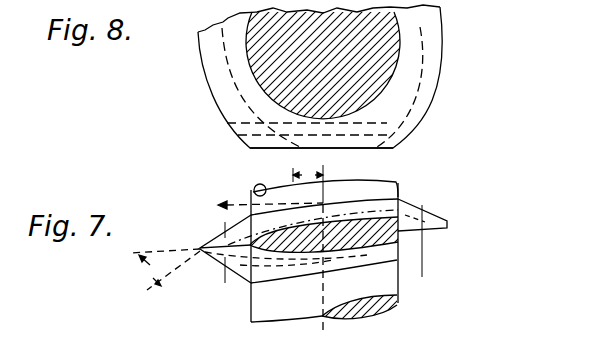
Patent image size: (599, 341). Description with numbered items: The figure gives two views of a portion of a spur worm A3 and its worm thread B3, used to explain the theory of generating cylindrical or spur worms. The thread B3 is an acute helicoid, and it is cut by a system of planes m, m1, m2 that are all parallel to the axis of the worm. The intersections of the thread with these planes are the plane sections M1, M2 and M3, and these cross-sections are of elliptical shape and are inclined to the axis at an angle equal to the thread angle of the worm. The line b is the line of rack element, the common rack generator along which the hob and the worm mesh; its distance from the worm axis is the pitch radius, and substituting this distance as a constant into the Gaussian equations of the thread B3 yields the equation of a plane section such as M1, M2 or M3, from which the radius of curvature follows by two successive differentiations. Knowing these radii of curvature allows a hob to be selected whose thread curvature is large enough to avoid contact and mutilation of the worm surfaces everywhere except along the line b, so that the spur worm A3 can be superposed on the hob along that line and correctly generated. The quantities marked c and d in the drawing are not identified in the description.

In FIG. 8, the spur worm A3 is at (446, 53).
In FIG. 7, the spur worm A3 is at (397, 190).
In FIG. 7, the worm thread B3 is at (440, 216).
In FIG. 7, the blade root portion M3 is at (397, 210).
In FIG. 7, the intersection of thread with plane m2 M2 is at (398, 233).
In FIG. 7, the intersection of thread with plane m1 M1 is at (373, 250).
In FIG. 8, the plane m is at (393, 148).
In FIG. 8, the plane m1 is at (402, 130).
In FIG. 8, the plane m2 is at (404, 125).
In FIG. 7, the line of rack element b is at (260, 184).
In FIG. 7, the offset dimension c is at (308, 175).
In FIG. 7, the angle dimension d is at (150, 270).